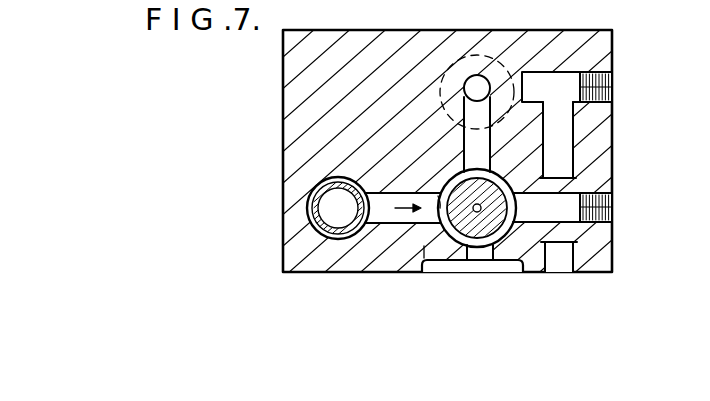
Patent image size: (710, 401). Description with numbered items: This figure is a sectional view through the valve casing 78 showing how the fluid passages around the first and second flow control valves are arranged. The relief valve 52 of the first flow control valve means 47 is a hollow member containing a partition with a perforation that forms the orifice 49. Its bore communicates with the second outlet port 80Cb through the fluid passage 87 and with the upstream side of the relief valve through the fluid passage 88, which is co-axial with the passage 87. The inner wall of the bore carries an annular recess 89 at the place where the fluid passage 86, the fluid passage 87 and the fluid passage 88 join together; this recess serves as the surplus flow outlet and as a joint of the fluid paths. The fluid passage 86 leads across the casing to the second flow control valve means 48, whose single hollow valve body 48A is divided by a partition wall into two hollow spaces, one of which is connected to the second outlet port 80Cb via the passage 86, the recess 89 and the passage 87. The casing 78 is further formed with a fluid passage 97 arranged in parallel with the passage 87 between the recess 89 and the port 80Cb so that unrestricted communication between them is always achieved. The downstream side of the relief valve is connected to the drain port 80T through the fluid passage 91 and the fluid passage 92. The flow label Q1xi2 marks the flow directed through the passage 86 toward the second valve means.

The valve casing 78 is at (300, 93).
The second flow control valve means 48 is at (306, 223).
The valve body 48A is at (316, 190).
The fluid passage 86 is at (380, 210).
The flow rate label Q1xi2 is at (400, 212).
The fluid passage 88 is at (474, 136).
The annular recess 89 is at (438, 195).
The relief valve 52 is at (460, 185).
The orifice 49 is at (492, 185).
The first flow control valve means 47 is at (427, 242).
The fluid passage 87 is at (475, 248).
The second outlet port 80Cb is at (477, 265).
The fluid passage 91 is at (558, 78).
The fluid passage 92 is at (553, 150).
The fluid passage 97 is at (512, 245).
The drain port 80T is at (558, 255).